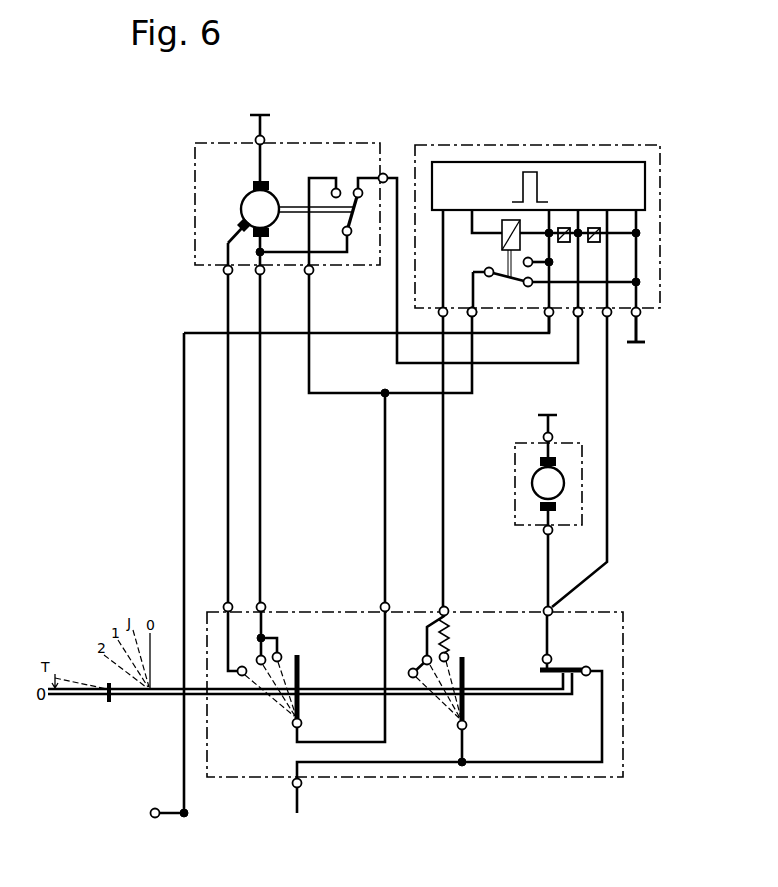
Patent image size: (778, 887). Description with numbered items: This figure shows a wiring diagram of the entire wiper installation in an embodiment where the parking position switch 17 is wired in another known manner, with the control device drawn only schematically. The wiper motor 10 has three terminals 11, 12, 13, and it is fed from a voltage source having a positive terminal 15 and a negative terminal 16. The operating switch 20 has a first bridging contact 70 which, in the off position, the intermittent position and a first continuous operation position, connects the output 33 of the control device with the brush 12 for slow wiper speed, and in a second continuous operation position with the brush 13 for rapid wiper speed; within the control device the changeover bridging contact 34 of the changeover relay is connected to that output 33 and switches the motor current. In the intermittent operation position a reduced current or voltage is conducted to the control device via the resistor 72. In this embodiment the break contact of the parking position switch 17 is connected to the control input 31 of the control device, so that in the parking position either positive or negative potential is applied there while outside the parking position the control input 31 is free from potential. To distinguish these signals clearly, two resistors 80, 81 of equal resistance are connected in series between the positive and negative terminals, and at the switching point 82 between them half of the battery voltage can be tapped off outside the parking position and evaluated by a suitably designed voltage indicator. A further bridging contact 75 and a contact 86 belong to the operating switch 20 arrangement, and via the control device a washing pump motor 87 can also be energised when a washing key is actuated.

The wiper motor 10 is at (243, 198).
The terminal 11 is at (268, 183).
The brush 12 is at (270, 233).
The brush 13 is at (238, 225).
The positive terminal 15 is at (155, 818).
The negative terminal 16 is at (646, 337).
The parking position switch 17 is at (358, 222).
The operating switch 20 is at (507, 772).
The control input 31 is at (582, 318).
The output 33 is at (476, 316).
The changeover bridging contact 34 is at (510, 279).
The first bridging contact 70 is at (301, 668).
The resistor 72 is at (455, 632).
The movable contact 75 is at (468, 673).
The resistor 80 is at (565, 226).
The resistor 81 is at (667, 283).
The switching point 82 is at (600, 238).
The washer pump contact 86 is at (563, 667).
The washing pump motor 87 is at (568, 508).